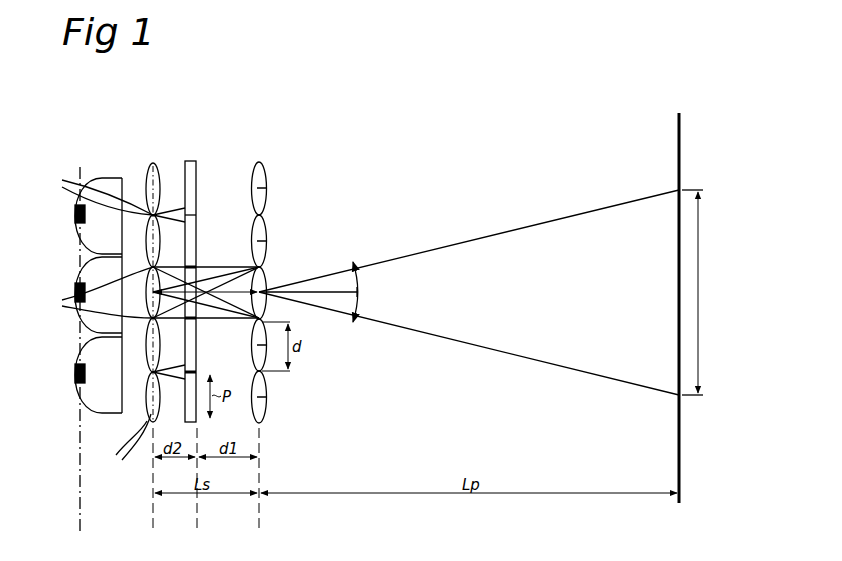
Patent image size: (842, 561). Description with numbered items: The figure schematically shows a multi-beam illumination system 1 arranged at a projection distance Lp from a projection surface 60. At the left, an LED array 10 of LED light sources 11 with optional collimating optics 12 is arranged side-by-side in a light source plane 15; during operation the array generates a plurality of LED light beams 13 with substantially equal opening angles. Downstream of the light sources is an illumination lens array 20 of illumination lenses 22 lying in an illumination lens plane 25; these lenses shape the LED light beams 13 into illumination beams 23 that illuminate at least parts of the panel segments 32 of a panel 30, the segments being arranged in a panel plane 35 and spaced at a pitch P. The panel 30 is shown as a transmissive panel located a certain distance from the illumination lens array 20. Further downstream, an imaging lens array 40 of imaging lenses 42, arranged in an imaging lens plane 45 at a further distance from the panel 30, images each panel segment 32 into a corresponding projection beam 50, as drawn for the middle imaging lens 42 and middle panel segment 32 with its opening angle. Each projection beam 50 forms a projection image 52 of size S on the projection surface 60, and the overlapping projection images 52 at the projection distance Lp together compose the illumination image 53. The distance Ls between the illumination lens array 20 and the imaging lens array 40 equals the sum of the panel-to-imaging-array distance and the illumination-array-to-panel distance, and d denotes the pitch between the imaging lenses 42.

The multi-beam illumination system 1 is at (258, 86).
The LED array 10 is at (106, 169).
The LED light source 11 is at (74, 209).
The collimating optics 12 is at (108, 180).
The LED light beam 13 is at (133, 188).
The light source plane 15 is at (80, 524).
The illumination lens array 20 is at (153, 160).
The illumination lens 22 is at (95, 325).
The illumination beam 23 is at (173, 180).
The illumination lens plane 25 is at (153, 524).
The panel 30 is at (195, 158).
The panel segment 32 is at (197, 187).
The panel plane 35 is at (197, 524).
The imaging lens array 40 is at (263, 158).
The imaging lens 42 is at (263, 282).
The imaging lens plane 45 is at (259, 524).
The projection beam 50 is at (522, 302).
The projection image 52 is at (672, 246).
The illumination image 53 is at (693, 151).
The projection surface 60 is at (677, 157).